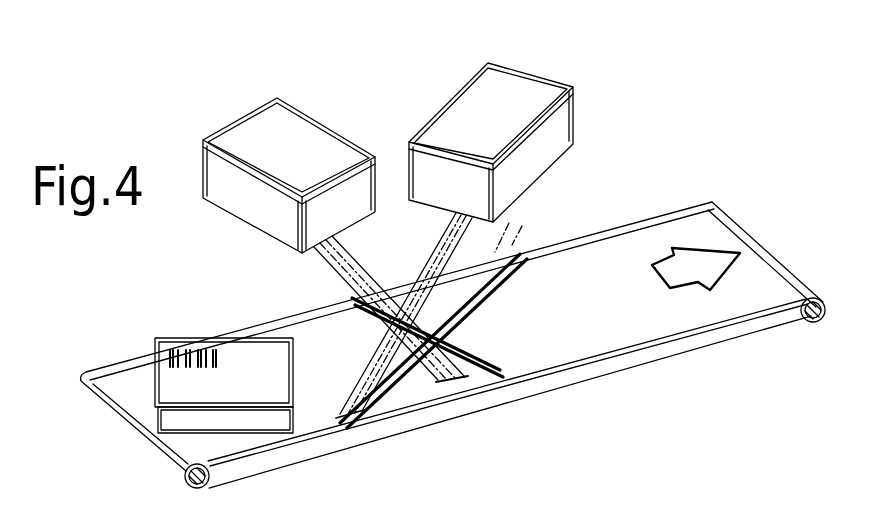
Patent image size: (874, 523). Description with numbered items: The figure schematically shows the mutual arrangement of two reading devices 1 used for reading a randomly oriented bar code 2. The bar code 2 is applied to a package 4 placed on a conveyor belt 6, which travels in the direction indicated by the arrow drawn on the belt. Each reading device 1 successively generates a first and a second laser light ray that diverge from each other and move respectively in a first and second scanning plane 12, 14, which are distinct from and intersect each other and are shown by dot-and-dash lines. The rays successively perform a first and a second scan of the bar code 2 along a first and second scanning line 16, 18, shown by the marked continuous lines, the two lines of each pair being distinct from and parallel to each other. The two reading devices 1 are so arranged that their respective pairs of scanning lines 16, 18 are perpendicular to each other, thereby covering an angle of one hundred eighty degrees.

The reading device 1 is at (237, 106).
The bar code 2 is at (208, 344).
The package 4 is at (160, 349).
The conveyor belt 6 is at (629, 241).
The first scanning plane 12 is at (346, 287).
The second scanning plane 14 is at (363, 266).
The first scanning line 16 is at (345, 426).
The second scanning line 18 is at (381, 398).